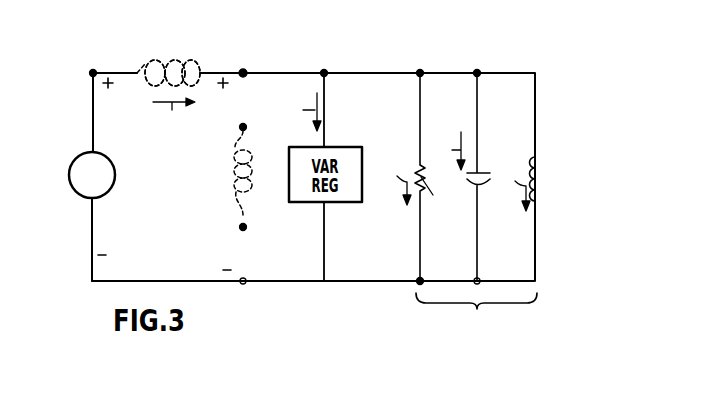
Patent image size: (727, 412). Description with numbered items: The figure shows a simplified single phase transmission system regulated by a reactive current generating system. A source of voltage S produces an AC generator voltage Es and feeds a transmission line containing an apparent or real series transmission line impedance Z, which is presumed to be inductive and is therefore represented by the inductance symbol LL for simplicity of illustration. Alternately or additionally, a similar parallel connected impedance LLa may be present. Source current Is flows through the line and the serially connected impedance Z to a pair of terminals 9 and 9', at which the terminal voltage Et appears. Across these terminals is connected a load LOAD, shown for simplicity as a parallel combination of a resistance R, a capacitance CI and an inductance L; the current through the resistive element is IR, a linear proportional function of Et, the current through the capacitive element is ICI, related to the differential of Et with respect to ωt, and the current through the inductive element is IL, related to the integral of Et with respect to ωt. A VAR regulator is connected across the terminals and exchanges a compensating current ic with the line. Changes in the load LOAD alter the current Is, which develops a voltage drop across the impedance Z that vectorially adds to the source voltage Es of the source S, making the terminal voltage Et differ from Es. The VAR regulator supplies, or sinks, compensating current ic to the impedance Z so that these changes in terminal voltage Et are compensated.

The source of voltage S is at (92, 175).
The AC generator voltage Es is at (95, 61).
The series transmission line impedance Z is at (168, 61).
The inductance symbol of line impedance LL is at (181, 59).
The source current Is is at (174, 116).
The terminal voltage Et is at (245, 72).
The terminal 9 is at (241, 103).
The parallel connected impedance LLa is at (234, 170).
The terminal 9' is at (241, 254).
The compensating current ic is at (302, 112).
The resistance R is at (432, 177).
The current through the resistive element IR is at (396, 179).
The current through the capacitive element ICI is at (446, 151).
The capacitance CI is at (490, 182).
The inductance L is at (531, 160).
The current through the inductive element IL is at (516, 185).
The load LOAD is at (476, 314).